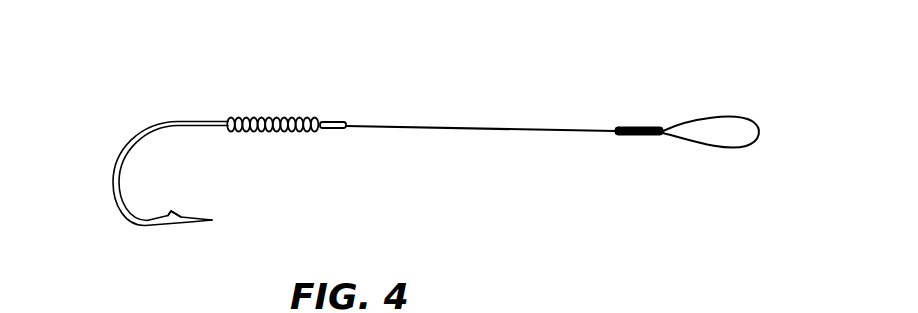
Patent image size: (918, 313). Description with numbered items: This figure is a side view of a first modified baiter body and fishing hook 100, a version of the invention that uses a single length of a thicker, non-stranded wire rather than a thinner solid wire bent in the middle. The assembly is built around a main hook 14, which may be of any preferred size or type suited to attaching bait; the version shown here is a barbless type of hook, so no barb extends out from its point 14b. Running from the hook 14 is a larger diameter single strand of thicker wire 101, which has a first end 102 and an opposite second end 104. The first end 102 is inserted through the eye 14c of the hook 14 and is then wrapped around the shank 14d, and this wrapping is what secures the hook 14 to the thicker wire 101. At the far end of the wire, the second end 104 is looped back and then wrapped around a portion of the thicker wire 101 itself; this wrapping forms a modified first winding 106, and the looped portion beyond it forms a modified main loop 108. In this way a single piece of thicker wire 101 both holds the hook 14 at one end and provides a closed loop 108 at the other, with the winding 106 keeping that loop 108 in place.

The main hook 14 is at (207, 153).
The point 14b is at (211, 222).
The eye 14c is at (344, 122).
The shank 14d is at (186, 119).
The first modified baiter body and fishing hook 100 is at (701, 105).
The thicker wire 101 is at (460, 130).
The first end 102 is at (227, 118).
The second end 104 is at (617, 127).
The modified first winding 106 is at (640, 136).
The modified main loop 108 is at (742, 147).